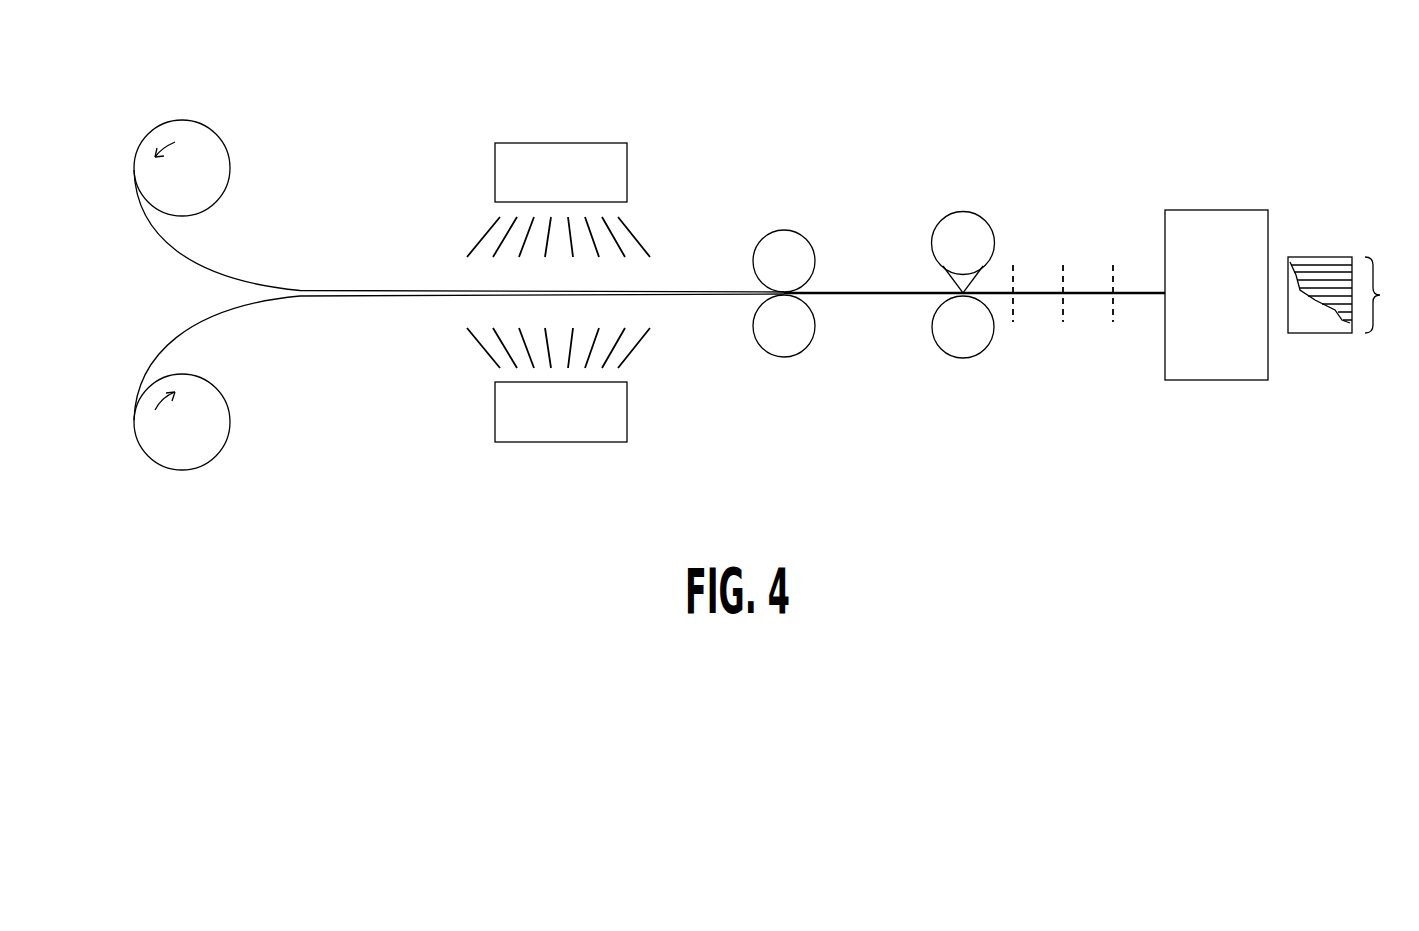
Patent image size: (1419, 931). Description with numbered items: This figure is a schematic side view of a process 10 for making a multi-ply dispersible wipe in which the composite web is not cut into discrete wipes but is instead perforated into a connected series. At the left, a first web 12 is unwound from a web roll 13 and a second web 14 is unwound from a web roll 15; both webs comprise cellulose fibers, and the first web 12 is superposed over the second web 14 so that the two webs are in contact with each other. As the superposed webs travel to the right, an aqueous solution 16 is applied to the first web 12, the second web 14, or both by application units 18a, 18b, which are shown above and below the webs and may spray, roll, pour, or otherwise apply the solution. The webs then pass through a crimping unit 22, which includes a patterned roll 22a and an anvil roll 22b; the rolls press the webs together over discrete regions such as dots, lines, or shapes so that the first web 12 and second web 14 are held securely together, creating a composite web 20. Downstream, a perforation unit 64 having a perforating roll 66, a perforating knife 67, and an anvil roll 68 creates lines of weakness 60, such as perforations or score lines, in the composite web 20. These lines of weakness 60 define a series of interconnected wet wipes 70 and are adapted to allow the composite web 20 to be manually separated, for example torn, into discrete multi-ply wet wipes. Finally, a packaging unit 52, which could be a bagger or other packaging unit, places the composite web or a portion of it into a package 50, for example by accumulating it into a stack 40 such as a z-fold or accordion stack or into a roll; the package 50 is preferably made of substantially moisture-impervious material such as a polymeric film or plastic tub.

The process 10 is at (1275, 78).
The first web 12 is at (297, 290).
The web roll 13 is at (222, 138).
The second web 14 is at (275, 297).
The web roll 15 is at (148, 458).
The aqueous solution 16 is at (652, 224).
The application unit 18a is at (598, 143).
The application unit 18b is at (495, 417).
The composite web 20 is at (848, 292).
The crimping unit 22 is at (806, 258).
The patterned roll 22a is at (790, 232).
The anvil roll 22b is at (806, 350).
The stack 40 is at (1387, 295).
The package 50 is at (1330, 340).
The packaging unit 52 is at (1233, 210).
The lines of weakness 60 is at (1013, 265).
The perforation unit 64 is at (967, 271).
The perforating roll 66 is at (993, 240).
The perforating knife 67 is at (960, 290).
The anvil roll 68 is at (963, 358).
The interconnected wet wipes 70 is at (1147, 295).